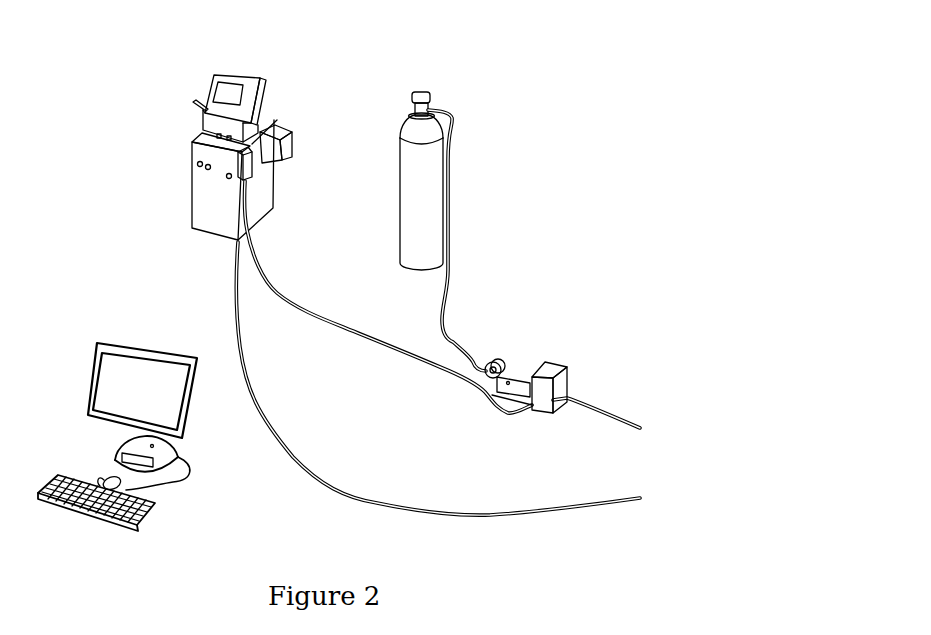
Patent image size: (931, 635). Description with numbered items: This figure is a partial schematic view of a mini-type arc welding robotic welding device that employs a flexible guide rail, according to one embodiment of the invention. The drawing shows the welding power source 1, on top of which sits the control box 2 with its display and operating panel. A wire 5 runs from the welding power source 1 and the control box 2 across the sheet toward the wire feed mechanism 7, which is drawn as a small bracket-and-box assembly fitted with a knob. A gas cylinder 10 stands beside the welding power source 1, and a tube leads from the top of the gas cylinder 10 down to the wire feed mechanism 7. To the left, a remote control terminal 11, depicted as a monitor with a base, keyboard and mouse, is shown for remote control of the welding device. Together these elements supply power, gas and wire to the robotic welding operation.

The welding power source 1 is at (217, 180).
The control box 2 is at (219, 74).
The wire 5 is at (442, 304).
The wire feed mechanism 7 is at (526, 358).
The gas cylinder 10 is at (419, 216).
The remote control terminal 11 is at (117, 437).